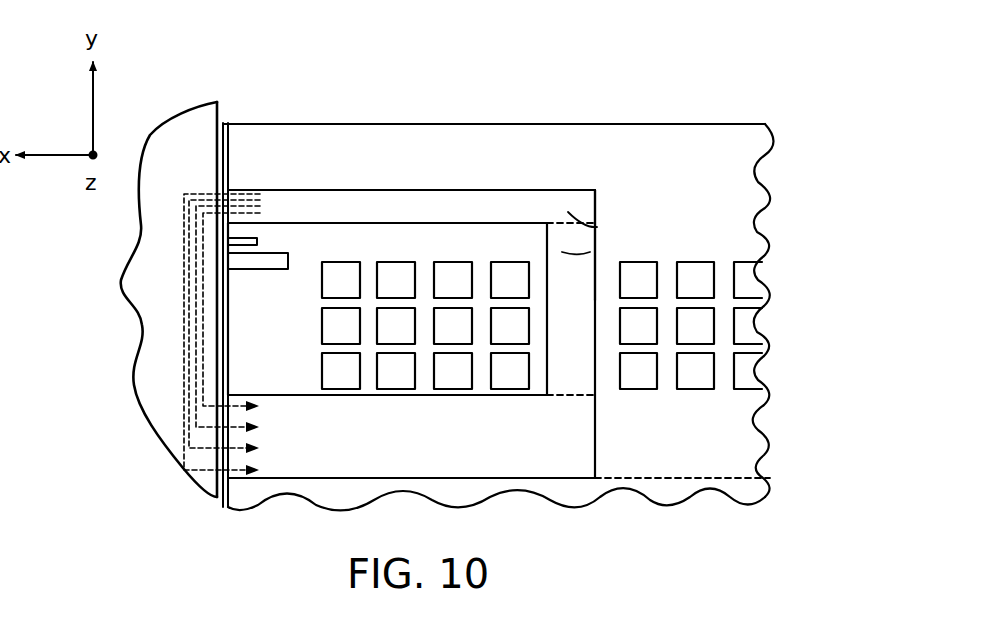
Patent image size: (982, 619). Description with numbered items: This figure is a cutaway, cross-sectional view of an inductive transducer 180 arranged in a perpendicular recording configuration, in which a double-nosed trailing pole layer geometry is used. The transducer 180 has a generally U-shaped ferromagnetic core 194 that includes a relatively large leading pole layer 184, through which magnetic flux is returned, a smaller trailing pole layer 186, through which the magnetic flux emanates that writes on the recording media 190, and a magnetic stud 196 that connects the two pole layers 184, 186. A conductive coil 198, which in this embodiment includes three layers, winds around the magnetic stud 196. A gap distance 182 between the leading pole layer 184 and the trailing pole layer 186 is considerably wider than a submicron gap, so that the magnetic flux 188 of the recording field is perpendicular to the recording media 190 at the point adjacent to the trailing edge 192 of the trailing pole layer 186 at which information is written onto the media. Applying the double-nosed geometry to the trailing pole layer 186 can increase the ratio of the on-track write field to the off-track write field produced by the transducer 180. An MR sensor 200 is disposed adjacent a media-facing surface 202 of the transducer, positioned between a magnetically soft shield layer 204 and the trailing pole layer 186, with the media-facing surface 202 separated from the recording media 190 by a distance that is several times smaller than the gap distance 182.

The transducer 180 is at (525, 92).
The gap distance 182 is at (229, 224).
The leading pole layer 184 is at (590, 435).
The trailing pole layer 186 is at (583, 205).
The magnetic flux 188 is at (184, 432).
The recording media 190 is at (150, 310).
The trailing edge 192 is at (281, 186).
The ferromagnetic core 194 is at (548, 408).
The magnetic stud 196 is at (590, 383).
The conductive coil 198 is at (775, 370).
The MR sensor 200 is at (258, 243).
The media-facing surface 202 is at (221, 502).
The shield layer 204 is at (288, 262).